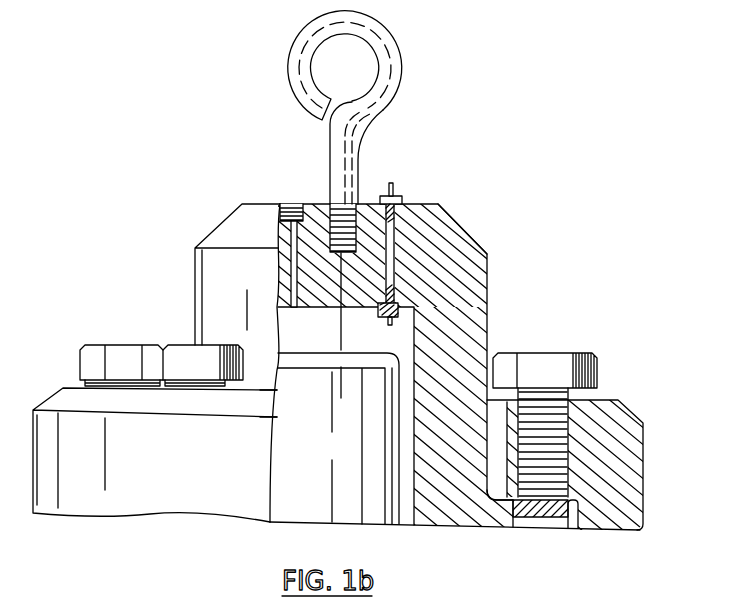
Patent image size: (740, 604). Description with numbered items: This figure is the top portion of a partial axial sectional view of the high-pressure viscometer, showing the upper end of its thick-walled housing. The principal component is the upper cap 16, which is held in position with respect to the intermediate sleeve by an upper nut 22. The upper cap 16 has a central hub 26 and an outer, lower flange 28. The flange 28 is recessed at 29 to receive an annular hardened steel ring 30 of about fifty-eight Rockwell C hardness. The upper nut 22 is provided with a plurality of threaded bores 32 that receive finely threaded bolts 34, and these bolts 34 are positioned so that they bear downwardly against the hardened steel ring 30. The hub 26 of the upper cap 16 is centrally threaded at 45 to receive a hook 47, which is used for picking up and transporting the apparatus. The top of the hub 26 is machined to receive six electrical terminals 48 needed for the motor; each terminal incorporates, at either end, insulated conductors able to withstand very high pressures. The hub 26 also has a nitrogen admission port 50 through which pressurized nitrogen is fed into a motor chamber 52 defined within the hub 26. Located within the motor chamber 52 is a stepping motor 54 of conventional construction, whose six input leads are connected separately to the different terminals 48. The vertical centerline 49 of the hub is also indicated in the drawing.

The upper cap 16 is at (488, 285).
The upper nut 22 is at (625, 478).
The central hub 26 is at (457, 242).
The outer lower flange 28 is at (489, 517).
The recess 29 is at (552, 522).
The hardened steel ring 30 is at (543, 517).
The threaded bores 32 is at (565, 420).
The finely threaded bolts 34 is at (187, 362).
The central threading 45 is at (340, 212).
The hook 47 is at (352, 152).
The electrical terminals 48 is at (400, 232).
The bore axis 49 is at (338, 322).
The nitrogen admission port 50 is at (291, 262).
The motor chamber 52 is at (364, 308).
The stepping motor 54 is at (353, 457).